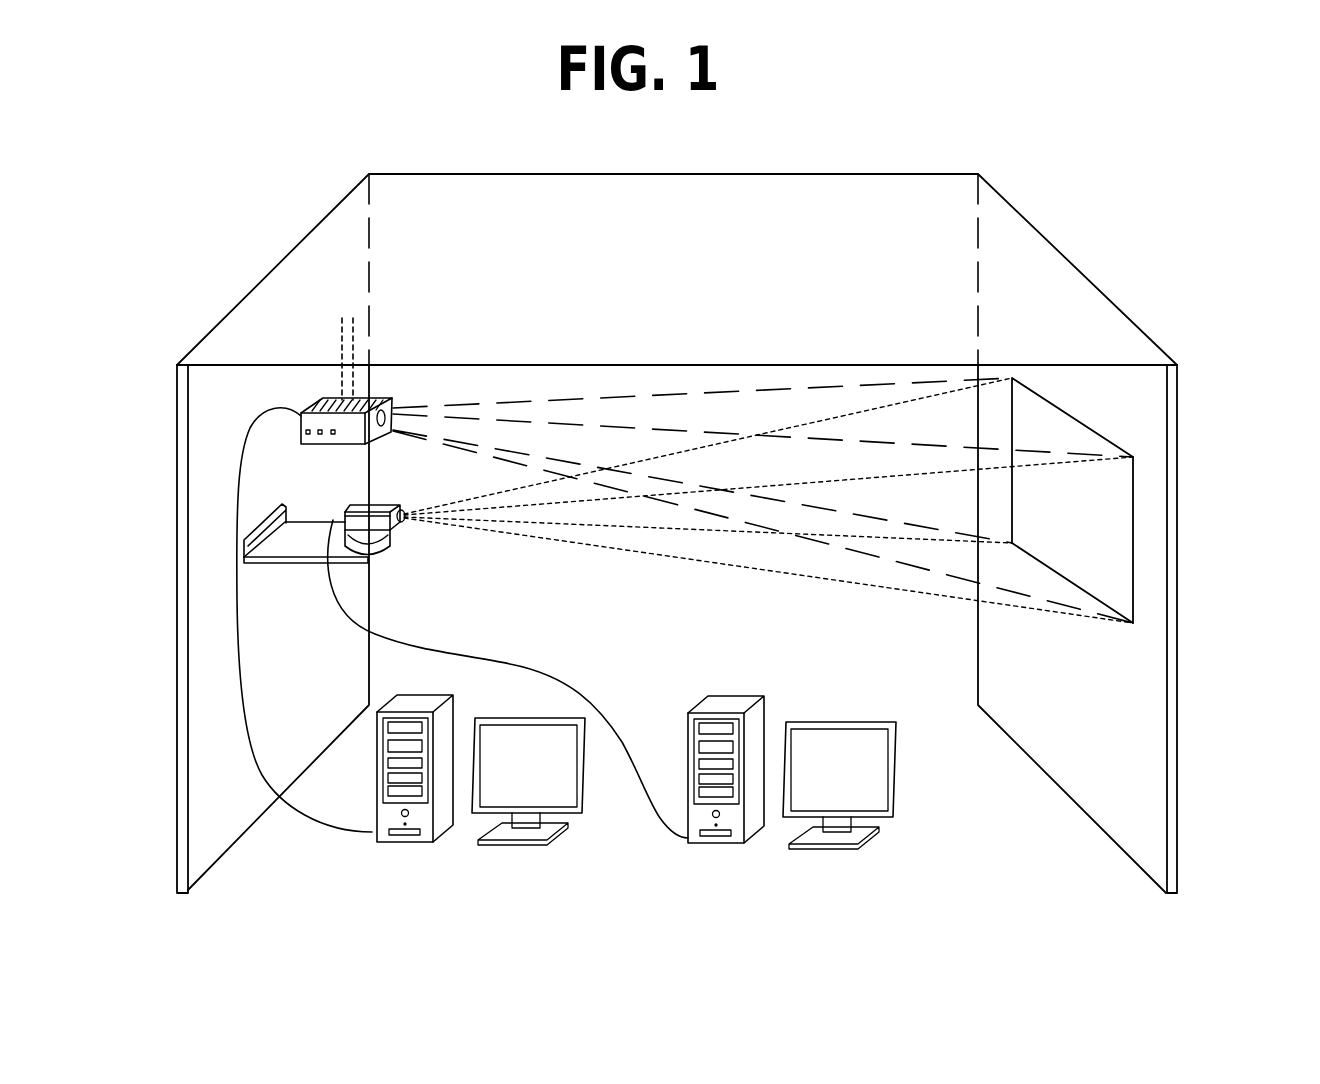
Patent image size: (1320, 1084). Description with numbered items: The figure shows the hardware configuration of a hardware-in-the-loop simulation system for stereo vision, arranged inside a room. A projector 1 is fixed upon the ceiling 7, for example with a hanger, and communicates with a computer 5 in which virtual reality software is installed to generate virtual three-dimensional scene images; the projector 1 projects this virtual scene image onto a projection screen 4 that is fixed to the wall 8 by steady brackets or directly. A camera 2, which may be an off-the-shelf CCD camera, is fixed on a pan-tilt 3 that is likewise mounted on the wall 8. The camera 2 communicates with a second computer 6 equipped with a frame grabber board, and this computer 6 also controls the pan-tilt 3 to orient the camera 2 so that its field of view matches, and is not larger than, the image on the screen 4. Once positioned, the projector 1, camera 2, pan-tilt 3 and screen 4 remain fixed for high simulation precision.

The projector 1 is at (323, 400).
The camera 2 is at (393, 527).
The pan-tilt 3 is at (292, 558).
The projection screen 4 is at (1102, 605).
The computer 5 is at (443, 835).
The computer 6 is at (737, 845).
The ceiling 7 is at (812, 250).
The wall 8 is at (225, 818).